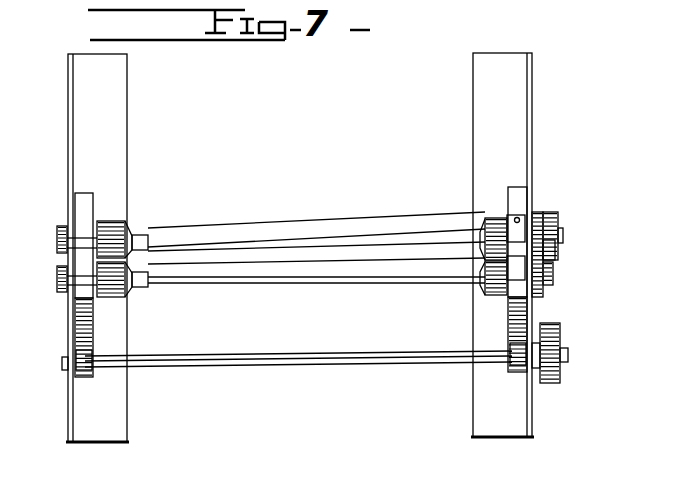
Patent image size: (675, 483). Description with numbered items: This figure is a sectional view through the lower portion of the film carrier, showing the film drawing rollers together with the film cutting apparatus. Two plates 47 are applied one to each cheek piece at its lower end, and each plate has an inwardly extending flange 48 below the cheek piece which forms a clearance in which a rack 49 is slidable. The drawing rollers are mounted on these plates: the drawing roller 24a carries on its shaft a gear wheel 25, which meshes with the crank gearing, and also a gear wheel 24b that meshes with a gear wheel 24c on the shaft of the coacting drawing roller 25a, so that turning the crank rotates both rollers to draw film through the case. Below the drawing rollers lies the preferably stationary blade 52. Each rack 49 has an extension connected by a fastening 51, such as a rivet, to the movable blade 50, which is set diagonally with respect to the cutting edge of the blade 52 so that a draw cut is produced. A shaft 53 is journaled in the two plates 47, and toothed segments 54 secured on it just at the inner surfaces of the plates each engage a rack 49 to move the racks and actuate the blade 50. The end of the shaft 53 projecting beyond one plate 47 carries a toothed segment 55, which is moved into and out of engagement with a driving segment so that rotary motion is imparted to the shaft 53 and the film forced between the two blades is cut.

The drawing roller 24a is at (519, 218).
The gear wheel 24b is at (556, 250).
The gear wheel 24c is at (542, 281).
The gear wheel 25 is at (557, 226).
The coacting drawing roller 25a is at (487, 283).
The plate 47 is at (67, 401).
The inwardly extending flange 48 is at (98, 443).
The rack 49 is at (73, 322).
The blade 50 is at (313, 208).
The fastening 51 is at (545, 212).
The stationary blade 52 is at (303, 284).
The shaft 53 is at (440, 365).
The toothed segment 54 is at (86, 360).
The toothed segment 55 is at (560, 370).